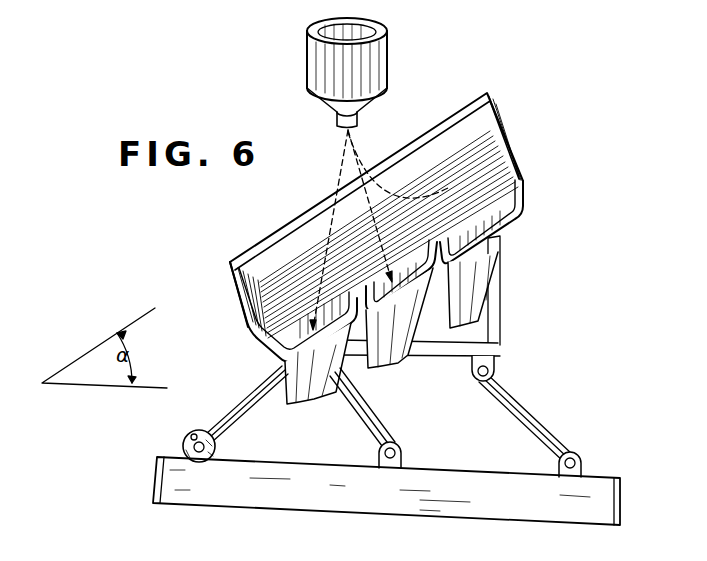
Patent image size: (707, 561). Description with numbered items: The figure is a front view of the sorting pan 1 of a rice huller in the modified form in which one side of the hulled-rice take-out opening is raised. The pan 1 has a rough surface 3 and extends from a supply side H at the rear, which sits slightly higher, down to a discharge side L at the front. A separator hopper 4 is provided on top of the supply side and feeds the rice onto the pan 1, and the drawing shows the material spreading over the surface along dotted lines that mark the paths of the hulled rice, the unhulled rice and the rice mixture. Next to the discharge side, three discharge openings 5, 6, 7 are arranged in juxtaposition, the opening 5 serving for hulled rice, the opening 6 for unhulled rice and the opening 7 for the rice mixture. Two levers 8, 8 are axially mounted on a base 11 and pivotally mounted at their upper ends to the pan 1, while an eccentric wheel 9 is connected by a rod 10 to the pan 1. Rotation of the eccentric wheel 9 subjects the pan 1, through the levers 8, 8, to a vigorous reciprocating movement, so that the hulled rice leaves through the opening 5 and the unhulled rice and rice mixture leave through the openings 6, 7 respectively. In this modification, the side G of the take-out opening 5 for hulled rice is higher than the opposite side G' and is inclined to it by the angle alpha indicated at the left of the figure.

The pan 1 is at (372, 258).
The rough surface 3 is at (462, 140).
The separator hopper 4 is at (380, 68).
The discharge opening 5 is at (494, 268).
The discharge opening 6 is at (399, 362).
The discharge opening 7 is at (315, 399).
The lever 8 is at (376, 424).
The eccentric wheel 9 is at (214, 447).
The rod 10 is at (244, 412).
The base 11 is at (156, 484).